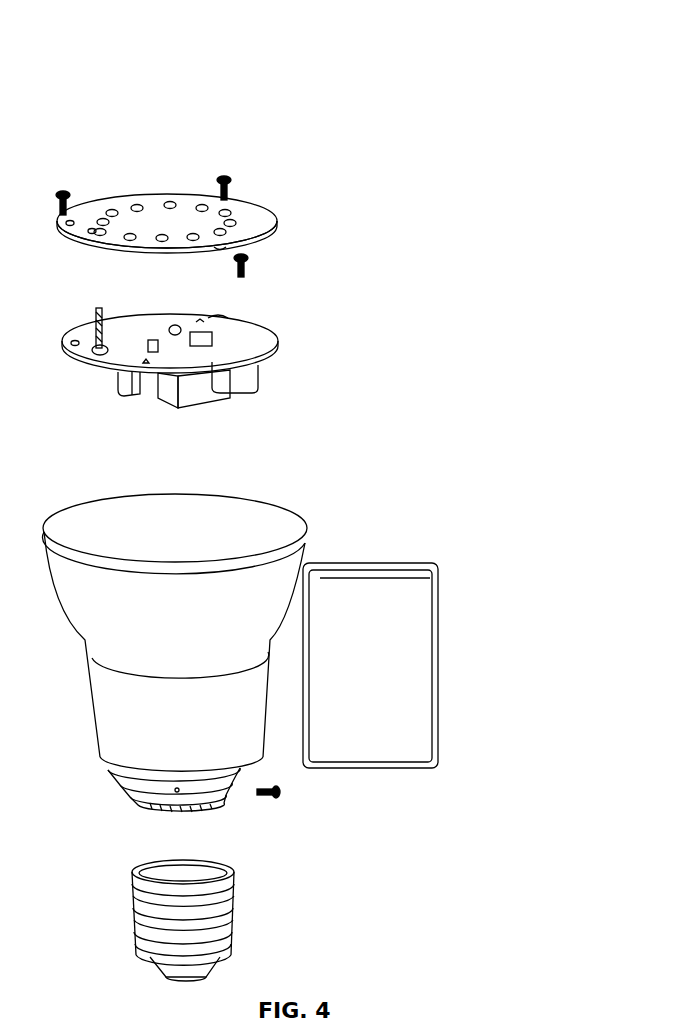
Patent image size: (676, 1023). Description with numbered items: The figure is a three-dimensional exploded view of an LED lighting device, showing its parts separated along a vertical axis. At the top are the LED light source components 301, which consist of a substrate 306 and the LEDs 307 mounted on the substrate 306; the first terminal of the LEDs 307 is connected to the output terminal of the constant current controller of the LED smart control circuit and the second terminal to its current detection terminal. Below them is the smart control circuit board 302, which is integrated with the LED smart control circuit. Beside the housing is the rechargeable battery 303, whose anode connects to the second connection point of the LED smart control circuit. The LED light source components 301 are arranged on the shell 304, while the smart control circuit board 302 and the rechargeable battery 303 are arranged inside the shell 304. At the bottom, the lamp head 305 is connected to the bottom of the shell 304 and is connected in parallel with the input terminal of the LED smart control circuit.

The LED light source components 301 is at (194, 134).
The smart control circuit board 302 is at (217, 331).
The rechargeable battery 303 is at (438, 643).
The shell 304 is at (230, 598).
The lamp head 305 is at (286, 903).
The substrate 306 is at (213, 188).
The LEDs 307 is at (151, 162).